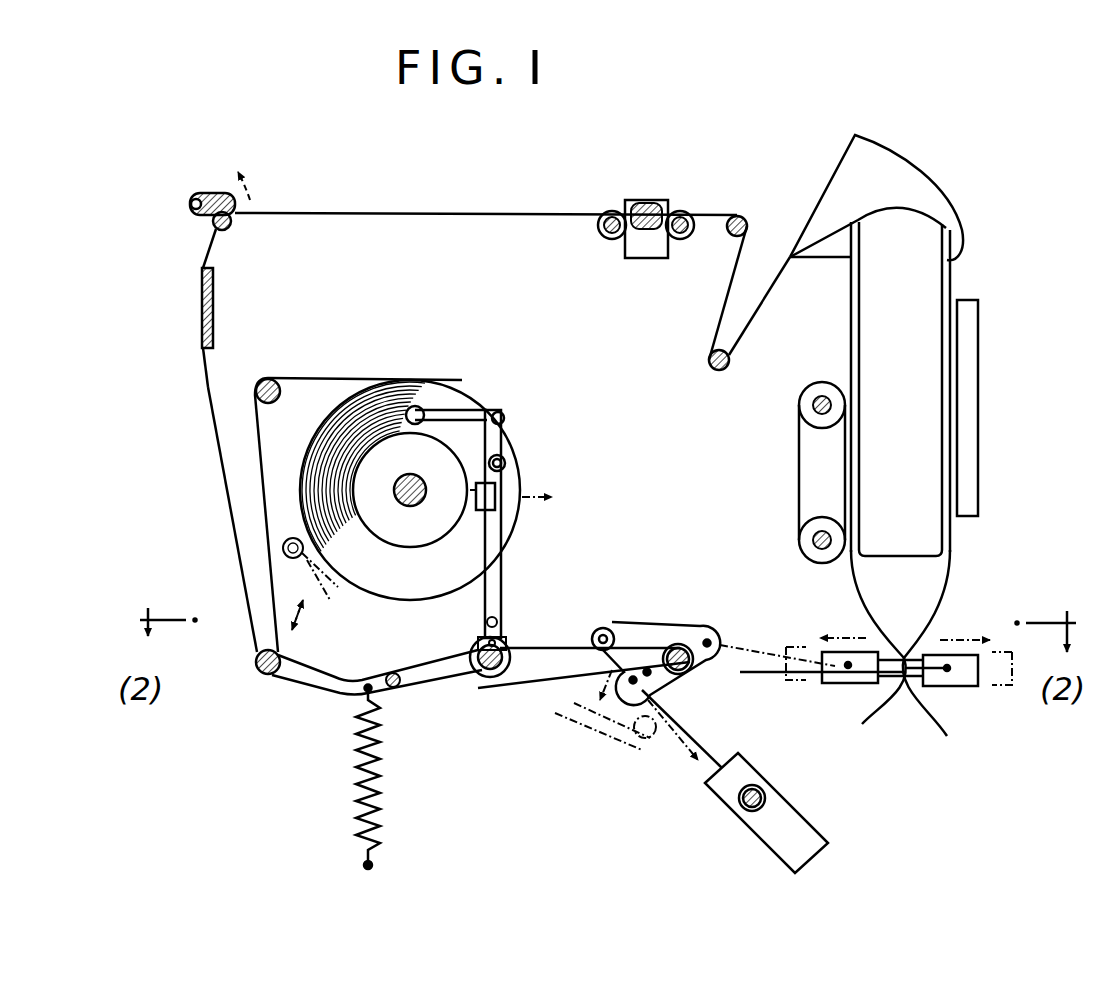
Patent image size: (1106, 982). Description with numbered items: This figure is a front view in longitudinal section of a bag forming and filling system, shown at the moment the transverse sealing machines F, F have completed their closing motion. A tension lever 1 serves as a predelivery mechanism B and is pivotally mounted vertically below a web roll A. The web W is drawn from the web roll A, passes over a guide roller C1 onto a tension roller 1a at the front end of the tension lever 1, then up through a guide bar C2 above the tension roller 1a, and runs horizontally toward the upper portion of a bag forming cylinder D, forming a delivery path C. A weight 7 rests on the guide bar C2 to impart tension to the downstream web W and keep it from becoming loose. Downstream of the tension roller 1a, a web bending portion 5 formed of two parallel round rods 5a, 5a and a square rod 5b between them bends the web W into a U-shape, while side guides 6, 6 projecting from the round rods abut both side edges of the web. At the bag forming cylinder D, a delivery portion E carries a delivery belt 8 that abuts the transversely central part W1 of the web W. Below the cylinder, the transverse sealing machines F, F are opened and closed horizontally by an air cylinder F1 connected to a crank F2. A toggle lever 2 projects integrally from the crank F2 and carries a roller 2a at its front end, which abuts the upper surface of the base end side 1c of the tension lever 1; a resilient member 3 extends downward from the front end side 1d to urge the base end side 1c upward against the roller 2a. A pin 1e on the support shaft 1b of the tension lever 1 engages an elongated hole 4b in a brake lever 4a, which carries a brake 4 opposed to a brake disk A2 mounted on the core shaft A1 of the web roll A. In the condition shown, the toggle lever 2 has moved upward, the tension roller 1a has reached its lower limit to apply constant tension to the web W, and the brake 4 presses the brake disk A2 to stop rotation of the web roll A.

The tension lever 1 is at (320, 716).
The tension roller 1a is at (292, 538).
The support shaft 1b is at (470, 675).
The base end side 1c is at (524, 670).
The front end side 1d is at (318, 600).
The pin 1e is at (500, 633).
The toggle lever 2 is at (650, 640).
The roller 2a is at (603, 628).
The resilient member 3 is at (375, 808).
The brake 4 is at (476, 498).
The brake lever 4a is at (500, 525).
The elongated hole 4b is at (486, 622).
The web bending portion 5 is at (633, 221).
The round rods 5a is at (608, 242).
The square rod 5b is at (644, 205).
The side guides 6 is at (682, 215).
The weight 7 is at (208, 192).
The delivery belt 8 is at (798, 425).
The web roll A is at (480, 398).
The core shaft A1 is at (422, 480).
The brake disk A2 is at (398, 528).
The predelivery mechanism B is at (252, 660).
The delivery path C is at (361, 210).
The guide roller C1 is at (282, 397).
The guide bar C2 is at (232, 228).
The bag forming cylinder D is at (936, 286).
The delivery portion E is at (850, 485).
The web W is at (470, 215).
The transversely central part W1 is at (850, 436).
The transverse sealing machines F is at (836, 688).
The air cylinder F1 is at (698, 740).
The crank F2 is at (732, 672).